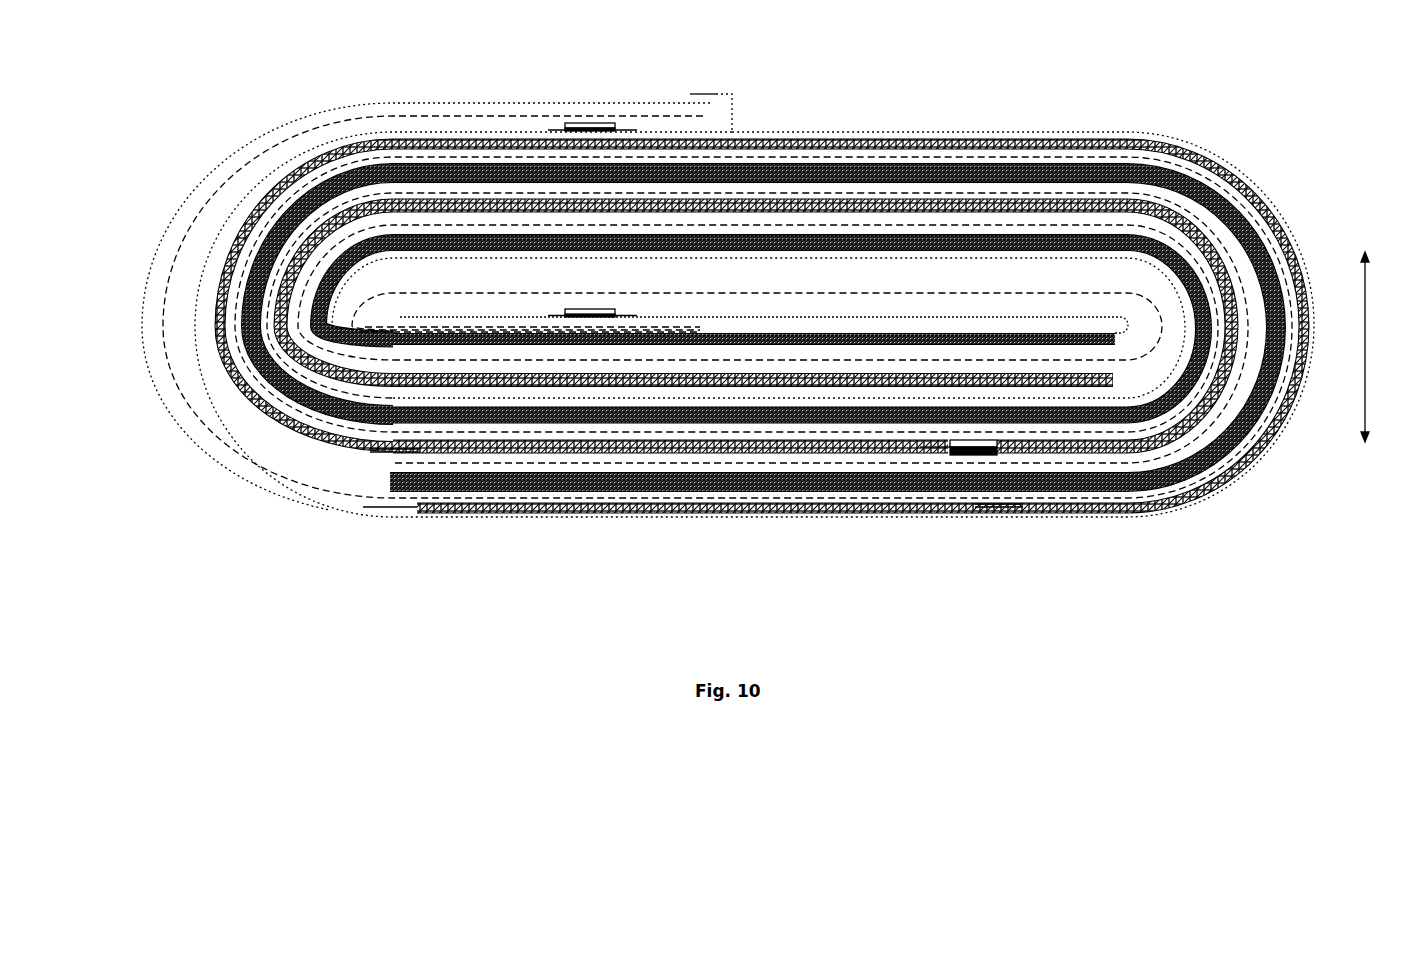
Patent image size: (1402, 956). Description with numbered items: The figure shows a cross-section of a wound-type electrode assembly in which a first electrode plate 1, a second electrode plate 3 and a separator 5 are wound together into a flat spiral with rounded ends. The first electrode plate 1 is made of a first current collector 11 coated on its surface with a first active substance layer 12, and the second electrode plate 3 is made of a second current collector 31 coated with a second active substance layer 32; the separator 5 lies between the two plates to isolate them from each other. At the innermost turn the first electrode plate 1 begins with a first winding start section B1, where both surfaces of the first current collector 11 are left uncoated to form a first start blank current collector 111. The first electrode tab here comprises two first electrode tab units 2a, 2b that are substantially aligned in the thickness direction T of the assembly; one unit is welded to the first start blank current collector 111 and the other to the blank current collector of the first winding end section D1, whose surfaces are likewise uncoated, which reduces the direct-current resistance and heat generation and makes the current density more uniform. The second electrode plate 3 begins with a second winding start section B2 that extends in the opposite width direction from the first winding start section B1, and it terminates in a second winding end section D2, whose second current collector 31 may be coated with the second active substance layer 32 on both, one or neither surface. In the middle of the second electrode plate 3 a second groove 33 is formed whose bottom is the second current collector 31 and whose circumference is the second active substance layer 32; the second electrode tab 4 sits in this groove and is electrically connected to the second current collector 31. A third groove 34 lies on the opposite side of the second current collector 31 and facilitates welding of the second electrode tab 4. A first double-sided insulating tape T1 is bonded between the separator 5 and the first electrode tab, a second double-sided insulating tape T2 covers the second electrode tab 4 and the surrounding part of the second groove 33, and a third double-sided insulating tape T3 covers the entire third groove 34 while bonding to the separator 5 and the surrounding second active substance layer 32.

The first electrode plate 1 is at (194, 503).
The first current collector 11 is at (375, 450).
The first active substance layer 12 is at (330, 413).
The first start blank current collector 111 is at (736, 317).
The first electrode tab unit 2a is at (590, 127).
The first electrode tab unit 2b is at (578, 312).
The second electrode plate 3 is at (1216, 568).
The second current collector 31 is at (1172, 482).
The second active substance layer 32 is at (1111, 447).
The second groove 33 is at (983, 456).
The third groove 34 is at (957, 456).
The second electrode tab 4 is at (970, 456).
The separator 5 is at (332, 293).
The first double-sided insulating tape T1 is at (597, 128).
The second double-sided insulating tape T2 is at (982, 508).
The third double-sided insulating tape T3 is at (960, 452).
The thickness direction T is at (1378, 347).
The first winding start section B1 is at (448, 317).
The second winding start section B2 is at (1085, 374).
The first winding end section D1 is at (214, 226).
The second winding end section D2 is at (157, 378).